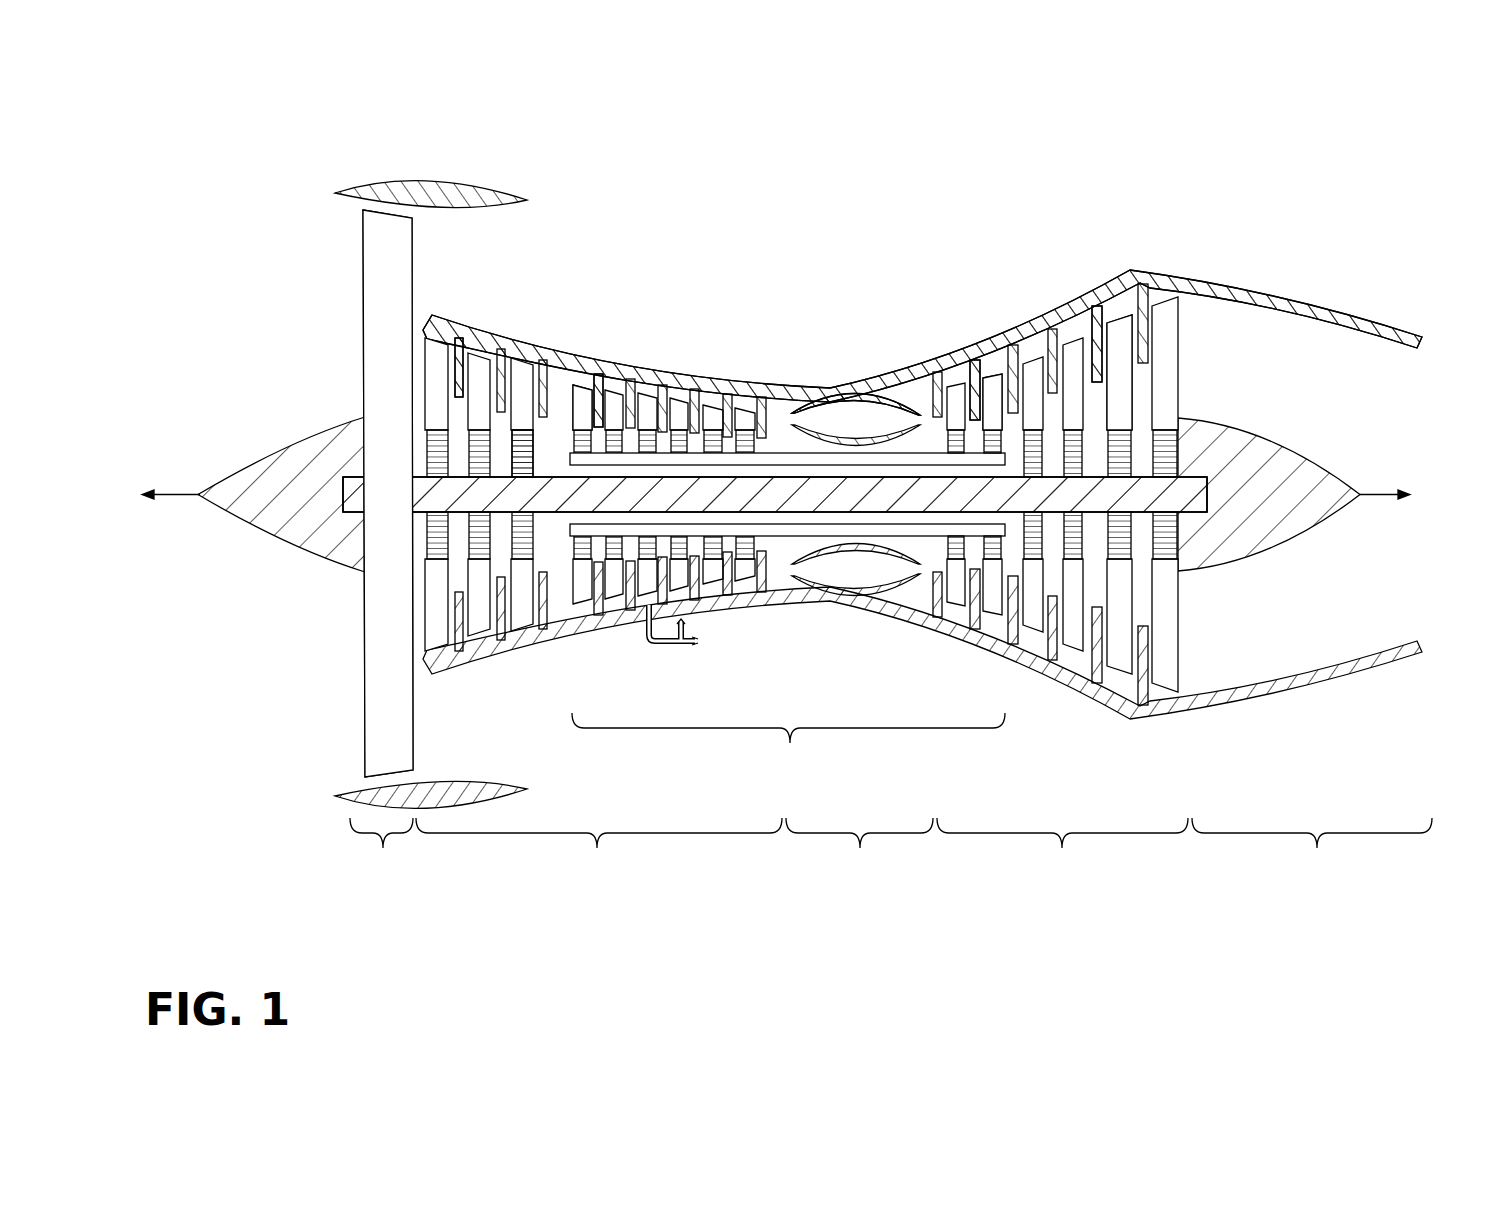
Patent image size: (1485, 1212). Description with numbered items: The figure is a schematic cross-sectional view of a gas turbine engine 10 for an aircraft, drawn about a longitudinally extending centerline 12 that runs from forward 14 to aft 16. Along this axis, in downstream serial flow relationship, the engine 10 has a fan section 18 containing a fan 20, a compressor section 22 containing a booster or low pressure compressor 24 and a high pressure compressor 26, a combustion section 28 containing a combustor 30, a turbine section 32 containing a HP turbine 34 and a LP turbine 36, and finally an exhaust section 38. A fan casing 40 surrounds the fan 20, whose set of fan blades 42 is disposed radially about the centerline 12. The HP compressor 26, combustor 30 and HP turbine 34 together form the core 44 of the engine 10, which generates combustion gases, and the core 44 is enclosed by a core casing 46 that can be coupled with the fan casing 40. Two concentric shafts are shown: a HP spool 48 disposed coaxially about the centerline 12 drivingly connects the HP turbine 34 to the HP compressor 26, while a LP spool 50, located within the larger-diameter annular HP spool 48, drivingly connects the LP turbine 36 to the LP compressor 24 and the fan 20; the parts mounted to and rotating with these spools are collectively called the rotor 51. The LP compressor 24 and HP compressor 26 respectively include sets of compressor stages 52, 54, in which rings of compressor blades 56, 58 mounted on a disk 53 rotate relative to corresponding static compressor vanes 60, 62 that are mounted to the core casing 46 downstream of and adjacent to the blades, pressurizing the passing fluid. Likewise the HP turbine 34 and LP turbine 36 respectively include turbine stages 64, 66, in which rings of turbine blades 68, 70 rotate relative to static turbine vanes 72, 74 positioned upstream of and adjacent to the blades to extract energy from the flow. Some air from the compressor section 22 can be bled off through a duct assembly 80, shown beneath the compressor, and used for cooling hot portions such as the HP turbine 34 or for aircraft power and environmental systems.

The gas turbine engine 10 is at (322, 140).
The centerline 12 is at (278, 485).
The forward 14 is at (192, 494).
The aft 16 is at (1366, 494).
The fan section 18 is at (383, 848).
The fan 20 is at (350, 290).
The compressor section 22 is at (597, 848).
The low pressure compressor 24 is at (549, 662).
The high pressure compressor 26 is at (732, 622).
The combustion section 28 is at (862, 850).
The combustor 30 is at (911, 386).
The turbine section 32 is at (1064, 850).
The HP turbine 34 is at (933, 655).
The LP turbine 36 is at (1057, 697).
The exhaust section 38 is at (1319, 850).
The fan casing 40 is at (440, 178).
The fan blades 42 is at (378, 699).
The core 44 is at (786, 742).
The core casing 46 is at (822, 392).
The HP spool 48 is at (787, 477).
The LP spool 50 is at (588, 331).
The rotor 51 is at (697, 460).
The compressor stages 52 is at (427, 290).
The disk 53 is at (552, 480).
The compressor stages 54 is at (590, 345).
The compressor blades 56 is at (458, 367).
The compressor blades 58 is at (598, 372).
The static compressor vanes 60 is at (523, 443).
The static compressor vanes 62 is at (583, 397).
The turbine stages 64 is at (956, 336).
The turbine stages 66 is at (1079, 274).
The turbine blades 68 is at (993, 385).
The turbine blades 70 is at (1118, 340).
The static turbine vanes 72 is at (975, 378).
The static turbine vanes 74 is at (1097, 325).
The duct assembly 80 is at (680, 658).